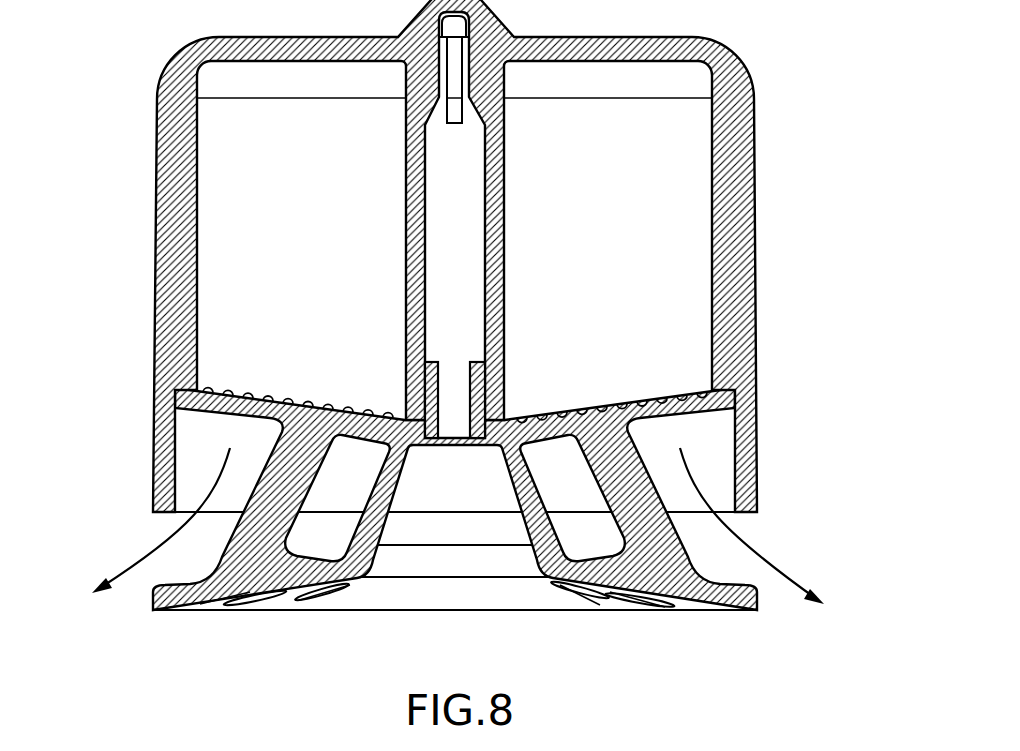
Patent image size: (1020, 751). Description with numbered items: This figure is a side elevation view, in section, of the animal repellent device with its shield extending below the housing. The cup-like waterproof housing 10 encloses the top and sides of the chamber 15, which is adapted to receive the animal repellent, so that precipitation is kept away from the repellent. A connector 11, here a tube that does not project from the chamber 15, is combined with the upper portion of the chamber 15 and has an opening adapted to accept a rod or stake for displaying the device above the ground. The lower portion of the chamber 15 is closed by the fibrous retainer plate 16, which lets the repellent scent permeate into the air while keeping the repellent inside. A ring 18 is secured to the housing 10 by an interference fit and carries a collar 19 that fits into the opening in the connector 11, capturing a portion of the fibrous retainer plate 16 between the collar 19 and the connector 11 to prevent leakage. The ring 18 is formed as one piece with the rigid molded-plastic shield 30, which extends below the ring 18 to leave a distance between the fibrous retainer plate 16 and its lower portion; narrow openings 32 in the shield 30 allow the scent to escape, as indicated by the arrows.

The housing 10 is at (168, 128).
The connector 11 is at (498, 173).
The chamber 15 is at (325, 178).
The fibrous retainer plate 16 is at (585, 395).
The ring 18 is at (693, 393).
The collar 19 is at (478, 373).
The shield 30 is at (656, 542).
The narrow openings 32 is at (352, 596).